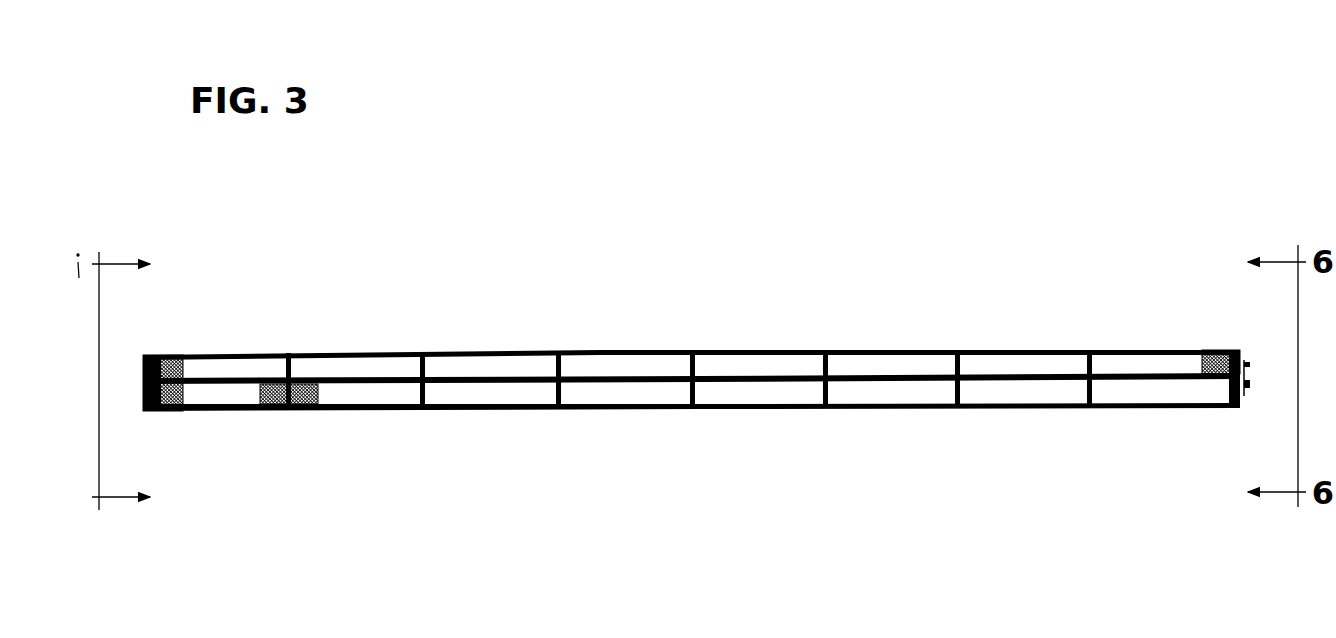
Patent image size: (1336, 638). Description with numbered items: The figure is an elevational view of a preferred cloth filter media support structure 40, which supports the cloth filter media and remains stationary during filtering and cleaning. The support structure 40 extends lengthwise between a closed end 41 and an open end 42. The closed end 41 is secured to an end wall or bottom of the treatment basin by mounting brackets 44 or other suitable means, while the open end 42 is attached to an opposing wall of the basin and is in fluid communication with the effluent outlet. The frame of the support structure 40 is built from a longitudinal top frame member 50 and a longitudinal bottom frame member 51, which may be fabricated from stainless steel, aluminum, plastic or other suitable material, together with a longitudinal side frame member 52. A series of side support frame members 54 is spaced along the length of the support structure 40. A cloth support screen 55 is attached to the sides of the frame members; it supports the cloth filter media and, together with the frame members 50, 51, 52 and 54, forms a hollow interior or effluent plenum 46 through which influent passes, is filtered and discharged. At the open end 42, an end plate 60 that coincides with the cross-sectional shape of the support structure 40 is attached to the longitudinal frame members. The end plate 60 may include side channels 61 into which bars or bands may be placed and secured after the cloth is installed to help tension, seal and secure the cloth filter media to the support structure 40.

The cloth filter media support structure 40 is at (692, 375).
The closed end 41 is at (140, 402).
The open end 42 is at (1238, 352).
The mounting brackets 44 is at (142, 368).
The effluent plenum 46 is at (1043, 388).
The longitudinal top frame member 50 is at (338, 352).
The longitudinal bottom frame member 51 is at (432, 408).
The longitudinal side frame member 52 is at (220, 377).
The side support frame members 54 is at (427, 368).
The cloth support screen 55 is at (318, 393).
The end plate 60 is at (1250, 367).
The side channels 61 is at (1247, 393).